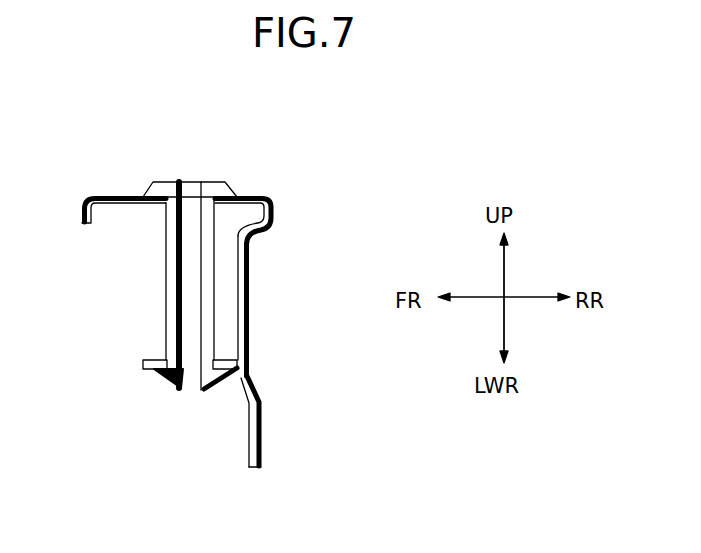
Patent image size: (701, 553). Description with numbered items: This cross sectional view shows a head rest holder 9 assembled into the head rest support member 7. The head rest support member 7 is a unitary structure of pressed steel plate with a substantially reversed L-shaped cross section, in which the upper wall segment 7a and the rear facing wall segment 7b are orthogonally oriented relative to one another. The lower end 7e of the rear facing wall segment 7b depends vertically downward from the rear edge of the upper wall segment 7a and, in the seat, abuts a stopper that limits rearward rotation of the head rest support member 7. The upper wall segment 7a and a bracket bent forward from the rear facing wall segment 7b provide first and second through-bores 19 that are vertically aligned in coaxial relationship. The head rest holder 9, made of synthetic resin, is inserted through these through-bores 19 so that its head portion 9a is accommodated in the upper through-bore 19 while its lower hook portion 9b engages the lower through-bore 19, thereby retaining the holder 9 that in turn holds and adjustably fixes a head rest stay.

The head rest support member 7 is at (286, 295).
The upper wall segment 7a is at (252, 195).
The rear facing wall segment 7b is at (249, 323).
The lower end 7e is at (261, 447).
The head rest holder 9 is at (150, 287).
The head portion 9a is at (160, 181).
The lower hook portion 9b is at (167, 377).
The through-bore 19 is at (203, 183).